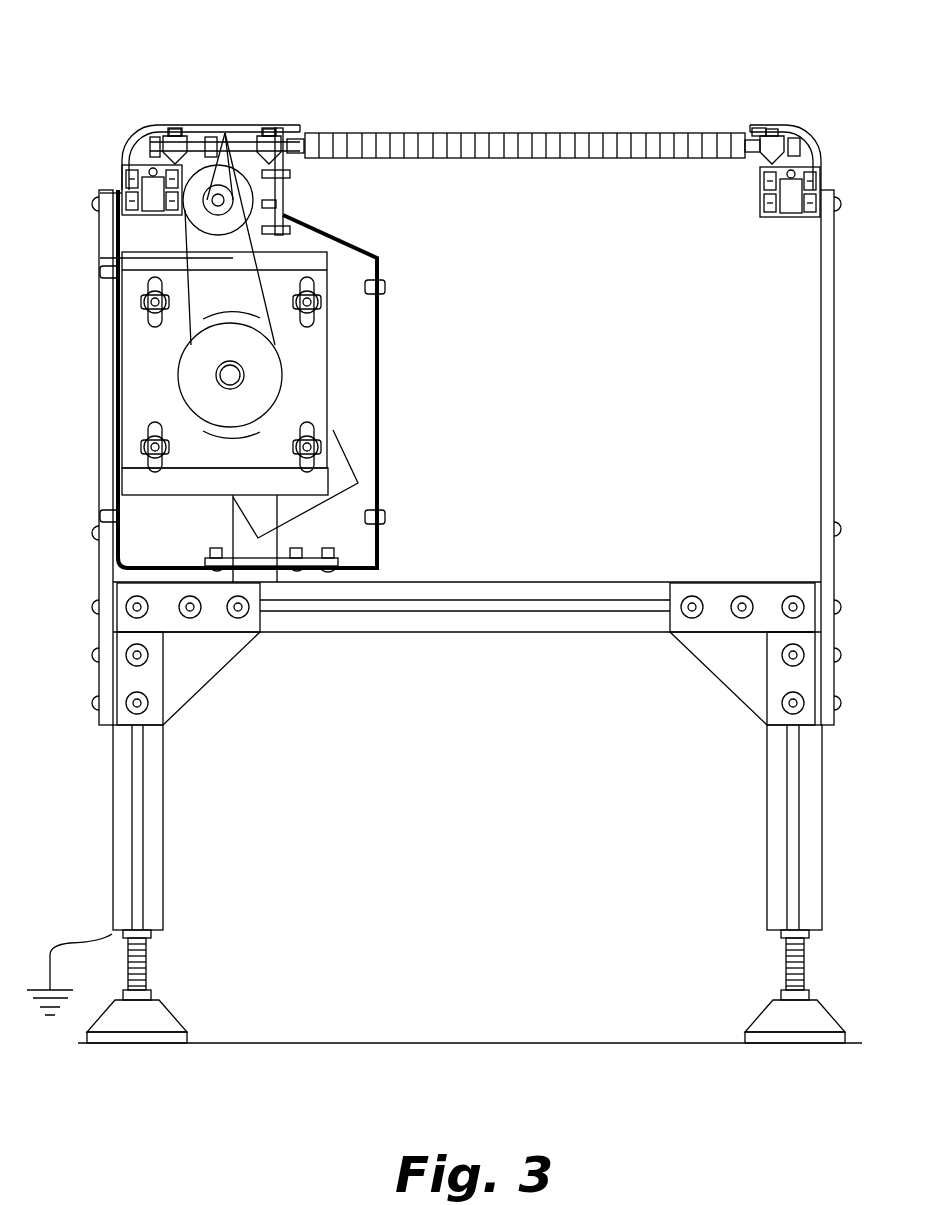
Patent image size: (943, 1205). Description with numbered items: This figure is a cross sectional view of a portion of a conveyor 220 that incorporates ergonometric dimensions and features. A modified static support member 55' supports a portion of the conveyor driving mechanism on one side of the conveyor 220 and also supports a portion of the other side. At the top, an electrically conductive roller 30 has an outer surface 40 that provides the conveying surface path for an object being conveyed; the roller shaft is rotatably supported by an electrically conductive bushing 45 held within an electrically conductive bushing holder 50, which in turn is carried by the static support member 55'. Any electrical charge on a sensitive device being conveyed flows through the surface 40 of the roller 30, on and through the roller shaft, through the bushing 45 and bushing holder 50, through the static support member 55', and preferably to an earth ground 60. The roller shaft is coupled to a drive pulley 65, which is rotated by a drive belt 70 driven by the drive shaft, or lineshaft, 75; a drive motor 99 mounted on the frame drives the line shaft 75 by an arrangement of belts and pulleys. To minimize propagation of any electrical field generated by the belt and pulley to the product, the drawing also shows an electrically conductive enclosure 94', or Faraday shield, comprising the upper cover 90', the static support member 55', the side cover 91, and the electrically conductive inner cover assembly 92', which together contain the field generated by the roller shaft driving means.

The conveyor 220 is at (141, 93).
The upper cover 90' is at (189, 123).
The modified static support member 55' is at (117, 169).
The bushing holder 50 is at (177, 147).
The bushing 45 is at (197, 132).
The drive pulley 65 is at (213, 135).
The electrically conductive roller 30 is at (327, 140).
The outer surface 40 is at (467, 137).
The drive belt 70 is at (285, 188).
The drive shaft 75 is at (267, 240).
The electrically conductive inner cover assembly 92' is at (300, 379).
The drive motor 99 is at (260, 392).
The electrically conductive enclosure 94' is at (290, 403).
The side cover 91 is at (118, 570).
The earth ground 60 is at (50, 955).